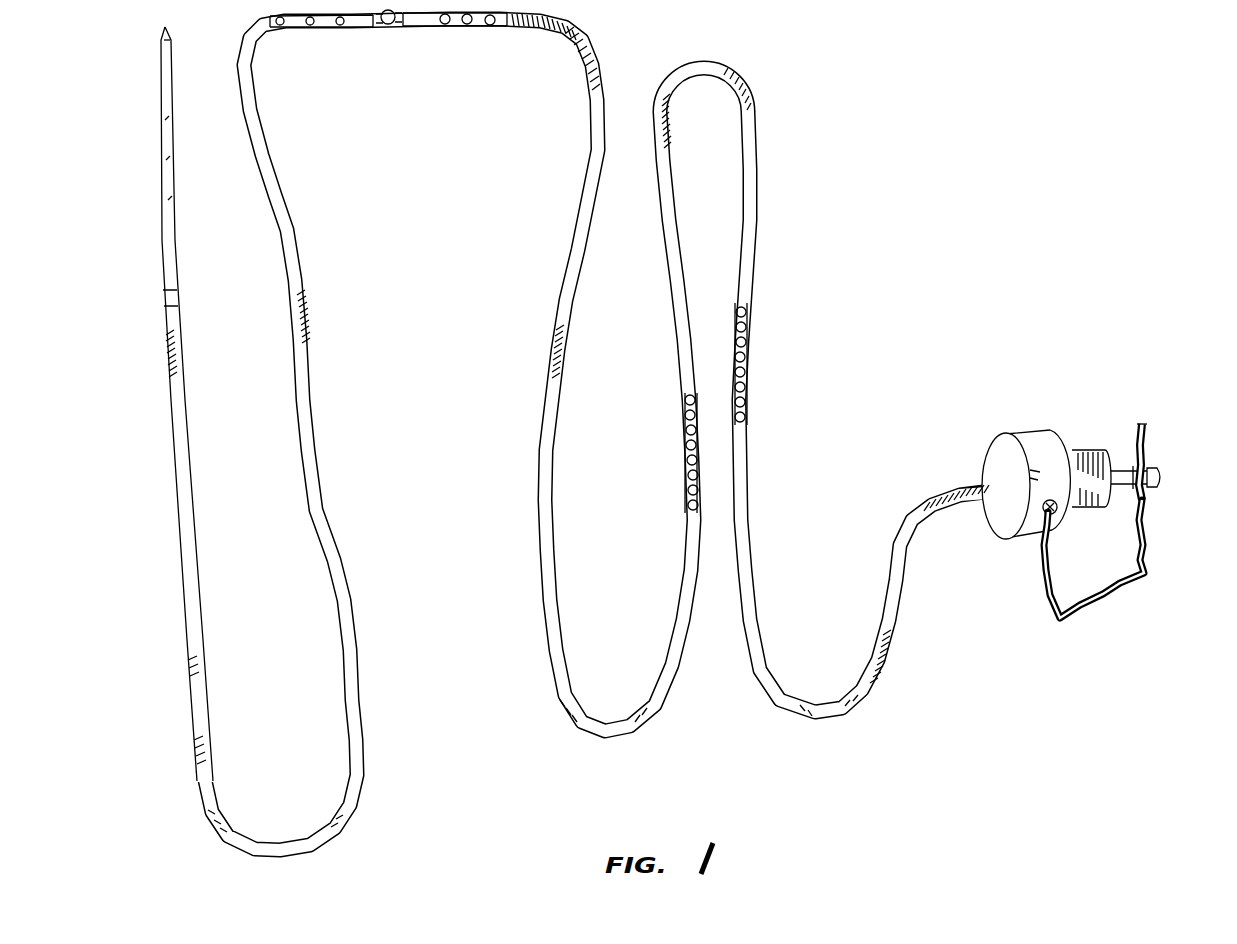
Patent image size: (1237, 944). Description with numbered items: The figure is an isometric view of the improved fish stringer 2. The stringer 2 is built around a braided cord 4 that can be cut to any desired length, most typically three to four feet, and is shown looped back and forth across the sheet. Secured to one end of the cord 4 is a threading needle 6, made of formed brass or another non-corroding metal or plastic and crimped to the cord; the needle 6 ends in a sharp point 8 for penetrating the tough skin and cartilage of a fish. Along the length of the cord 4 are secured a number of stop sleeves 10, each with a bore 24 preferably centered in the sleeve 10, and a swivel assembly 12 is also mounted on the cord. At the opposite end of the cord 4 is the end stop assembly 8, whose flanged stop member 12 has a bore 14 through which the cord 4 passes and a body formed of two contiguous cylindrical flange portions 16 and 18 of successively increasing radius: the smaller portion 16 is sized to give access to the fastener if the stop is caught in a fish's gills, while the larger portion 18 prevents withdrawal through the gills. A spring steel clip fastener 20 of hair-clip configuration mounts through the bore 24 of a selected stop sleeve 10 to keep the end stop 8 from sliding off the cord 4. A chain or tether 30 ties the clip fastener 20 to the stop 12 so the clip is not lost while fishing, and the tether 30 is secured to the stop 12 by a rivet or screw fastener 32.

The fish stringer 2 is at (601, 434).
The braided cord 4 is at (322, 505).
The threading needle 6 is at (160, 163).
The end stop assembly 8 is at (163, 30).
The stop sleeves 10 is at (748, 348).
The flanged slide or stop member 12 is at (443, 16).
The bore 14 is at (1000, 479).
The smaller diameter flange portion 16 is at (1090, 449).
The larger diameter flange portion 18 is at (998, 522).
The clip fastener 20 is at (1148, 542).
The bore 24 is at (750, 376).
The chain or tether 30 is at (1073, 619).
The rivet or screw fastener 32 is at (1057, 514).